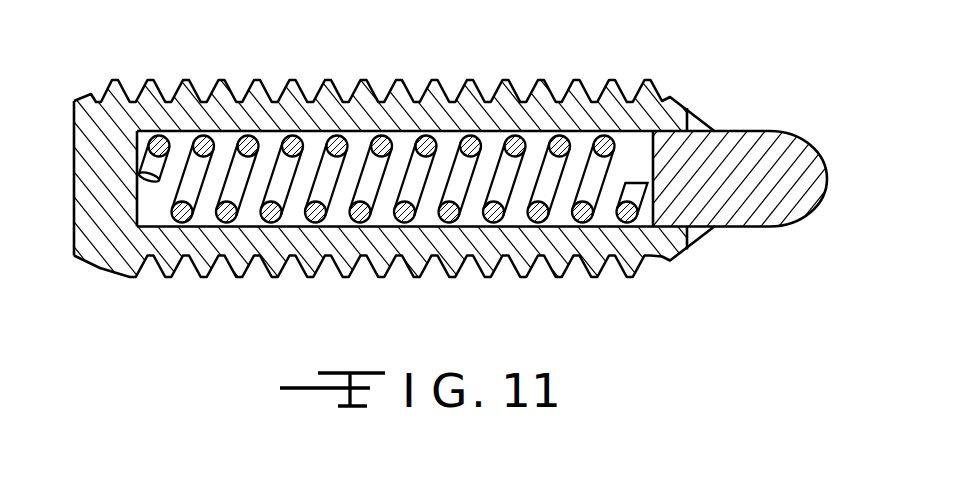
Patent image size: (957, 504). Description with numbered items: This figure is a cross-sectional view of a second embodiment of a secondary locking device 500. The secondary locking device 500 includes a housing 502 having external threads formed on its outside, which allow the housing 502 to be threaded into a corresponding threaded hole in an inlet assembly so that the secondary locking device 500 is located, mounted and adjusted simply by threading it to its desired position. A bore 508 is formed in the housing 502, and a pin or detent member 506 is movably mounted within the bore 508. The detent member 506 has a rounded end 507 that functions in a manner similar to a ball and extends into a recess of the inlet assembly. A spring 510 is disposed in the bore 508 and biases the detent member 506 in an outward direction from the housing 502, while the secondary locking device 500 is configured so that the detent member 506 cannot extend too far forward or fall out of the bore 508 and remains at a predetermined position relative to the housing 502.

The secondary locking device 500 is at (492, 252).
The housing 502 is at (473, 92).
The detent member 506 is at (782, 211).
The rounded end 507 is at (828, 188).
The bore 508 is at (393, 232).
The spring 510 is at (517, 203).